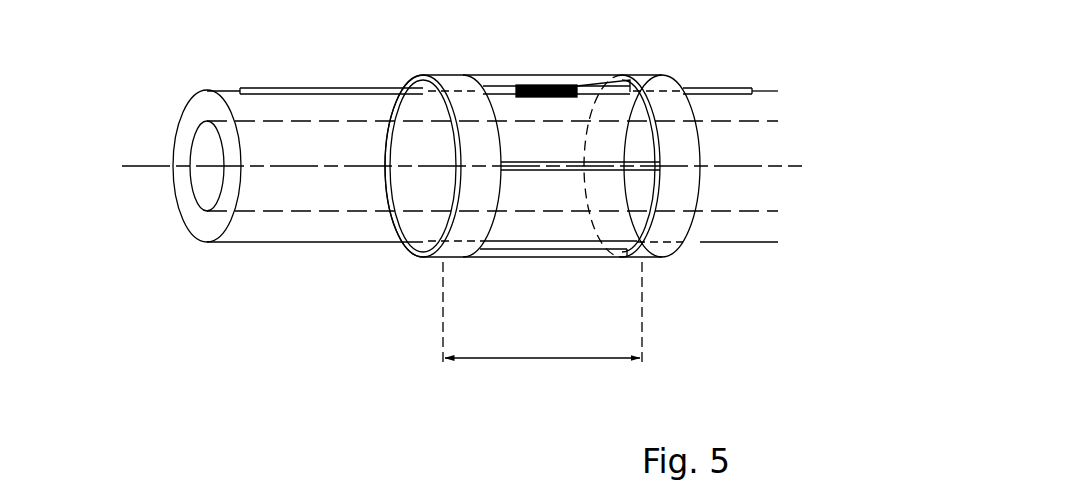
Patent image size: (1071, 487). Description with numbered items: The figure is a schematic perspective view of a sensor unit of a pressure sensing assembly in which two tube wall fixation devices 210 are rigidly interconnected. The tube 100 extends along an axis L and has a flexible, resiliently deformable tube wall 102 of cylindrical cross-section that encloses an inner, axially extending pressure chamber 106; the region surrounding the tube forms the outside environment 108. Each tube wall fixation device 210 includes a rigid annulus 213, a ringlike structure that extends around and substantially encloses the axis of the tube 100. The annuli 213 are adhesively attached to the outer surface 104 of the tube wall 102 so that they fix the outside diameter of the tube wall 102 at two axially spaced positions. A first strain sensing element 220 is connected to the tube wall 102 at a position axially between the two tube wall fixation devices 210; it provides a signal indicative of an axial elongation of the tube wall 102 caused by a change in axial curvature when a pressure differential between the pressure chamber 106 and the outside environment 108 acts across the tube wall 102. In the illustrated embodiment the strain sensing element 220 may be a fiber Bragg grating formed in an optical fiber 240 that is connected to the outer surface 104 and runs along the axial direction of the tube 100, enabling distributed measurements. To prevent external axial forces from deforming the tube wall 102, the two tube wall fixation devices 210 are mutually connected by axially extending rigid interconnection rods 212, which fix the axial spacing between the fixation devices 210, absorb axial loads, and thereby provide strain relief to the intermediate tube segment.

The tube 100 is at (447, 193).
The tube wall 102 is at (426, 169).
The outer surface 104 is at (300, 246).
The pressure chamber 106 is at (215, 178).
The outside environment 108 is at (556, 173).
The tube wall fixation device 210 is at (475, 63).
The interconnection rod 212 is at (567, 170).
The annulus 213 is at (460, 247).
The first strain sensing element 220 is at (547, 80).
The optical fiber 240 is at (300, 87).